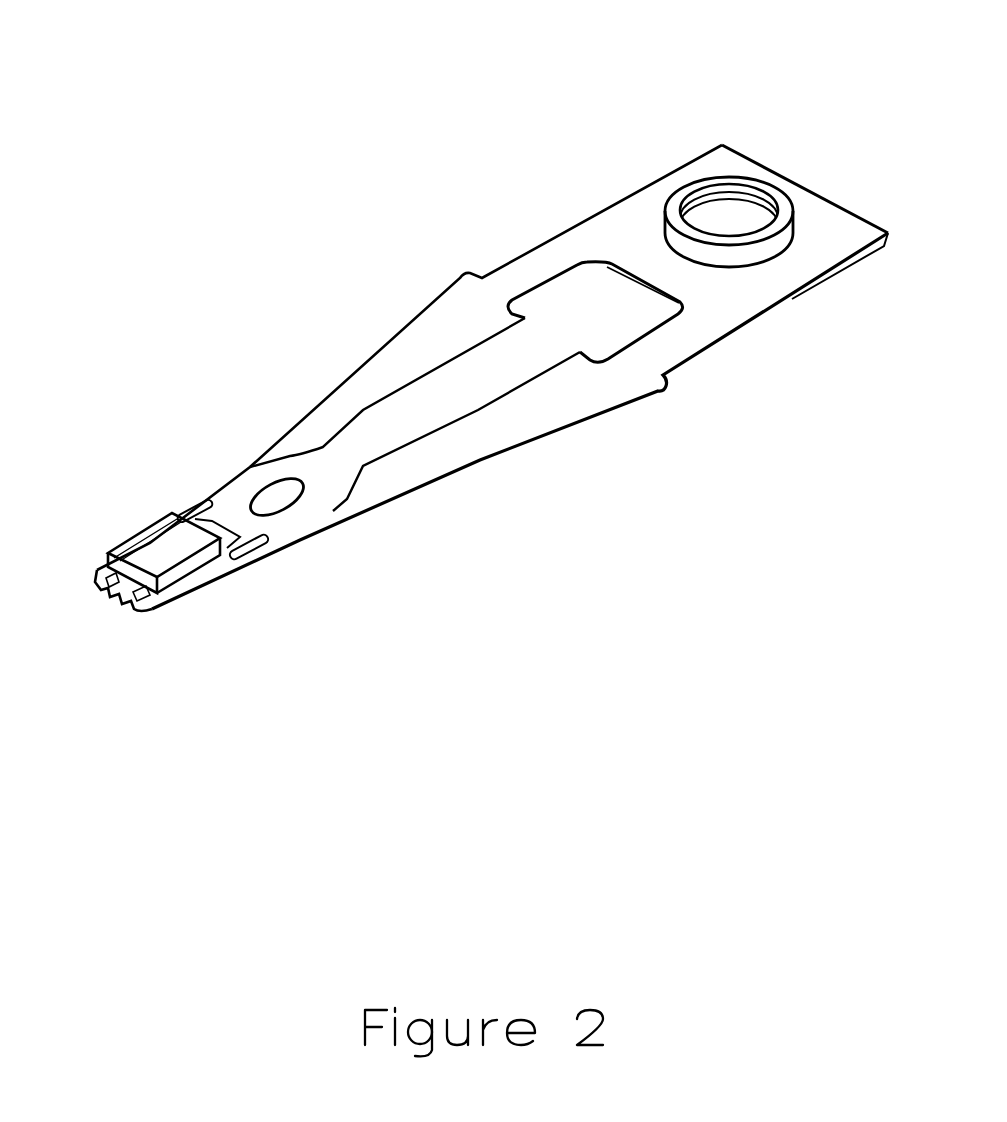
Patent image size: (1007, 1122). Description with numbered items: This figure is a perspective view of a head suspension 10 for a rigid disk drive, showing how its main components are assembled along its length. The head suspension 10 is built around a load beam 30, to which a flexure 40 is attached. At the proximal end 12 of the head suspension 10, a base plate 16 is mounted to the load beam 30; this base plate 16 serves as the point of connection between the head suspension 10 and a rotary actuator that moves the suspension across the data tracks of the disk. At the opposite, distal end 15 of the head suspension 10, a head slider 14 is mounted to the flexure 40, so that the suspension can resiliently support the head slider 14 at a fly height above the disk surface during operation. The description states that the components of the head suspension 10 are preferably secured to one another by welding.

The head suspension 10 is at (432, 153).
The proximal end 12 is at (722, 145).
The head slider 14 is at (178, 578).
The distal end 15 is at (96, 573).
The base plate 16 is at (873, 248).
The load beam 30 is at (652, 363).
The flexure 40 is at (290, 463).